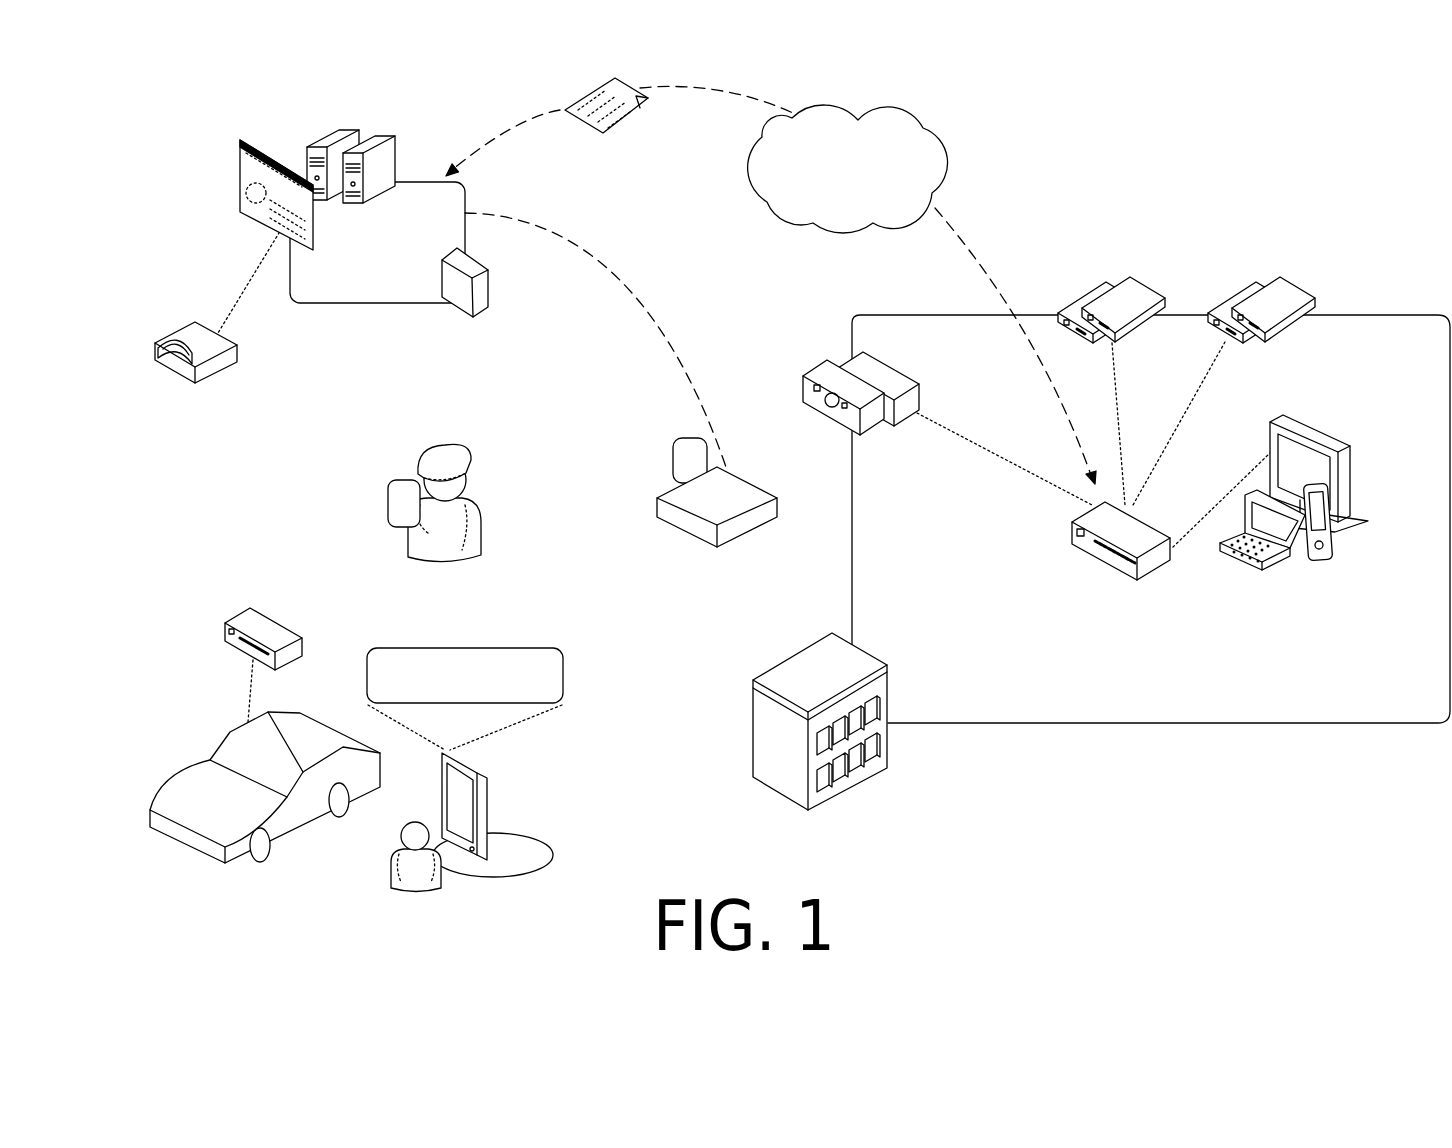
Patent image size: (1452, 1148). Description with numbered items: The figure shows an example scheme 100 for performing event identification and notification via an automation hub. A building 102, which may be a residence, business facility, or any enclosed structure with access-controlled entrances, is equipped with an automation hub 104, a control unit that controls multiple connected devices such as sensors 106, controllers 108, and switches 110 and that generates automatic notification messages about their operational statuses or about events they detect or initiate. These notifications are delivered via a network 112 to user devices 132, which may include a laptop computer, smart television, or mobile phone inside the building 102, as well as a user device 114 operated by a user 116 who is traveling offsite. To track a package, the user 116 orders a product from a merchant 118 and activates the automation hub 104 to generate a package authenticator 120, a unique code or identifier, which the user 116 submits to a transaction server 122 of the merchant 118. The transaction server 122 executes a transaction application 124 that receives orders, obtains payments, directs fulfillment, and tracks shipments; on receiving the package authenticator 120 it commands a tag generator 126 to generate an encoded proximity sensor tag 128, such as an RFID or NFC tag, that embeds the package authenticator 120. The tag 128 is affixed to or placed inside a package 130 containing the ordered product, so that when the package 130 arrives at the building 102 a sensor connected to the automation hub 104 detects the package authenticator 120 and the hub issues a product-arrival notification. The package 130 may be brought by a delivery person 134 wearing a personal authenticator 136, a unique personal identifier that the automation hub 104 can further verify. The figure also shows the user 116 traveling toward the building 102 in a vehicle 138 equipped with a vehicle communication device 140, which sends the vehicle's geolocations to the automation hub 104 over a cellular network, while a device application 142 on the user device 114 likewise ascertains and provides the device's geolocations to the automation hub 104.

The scheme 100 is at (217, 110).
The building 102 is at (778, 660).
The automation hub 104 is at (1086, 554).
The sensors 106 is at (818, 364).
The controllers 108 is at (1084, 304).
The switches 110 is at (1292, 283).
The network 112 is at (848, 169).
The user device 114 is at (485, 765).
The user 116 is at (413, 890).
The merchant 118 is at (389, 249).
The package authenticator 120 is at (633, 84).
The transaction server 122 is at (350, 132).
The transaction application 124 is at (259, 226).
The tag generator 126 is at (178, 330).
The encoded proximity sensor tag 128 is at (686, 437).
The package 130 is at (672, 522).
The user devices 132 is at (1326, 432).
The delivery person 134 is at (425, 550).
The personal authenticator 136 is at (406, 480).
The vehicle 138 is at (188, 843).
The vehicle communication device 140 is at (280, 622).
The device application 142 is at (465, 676).